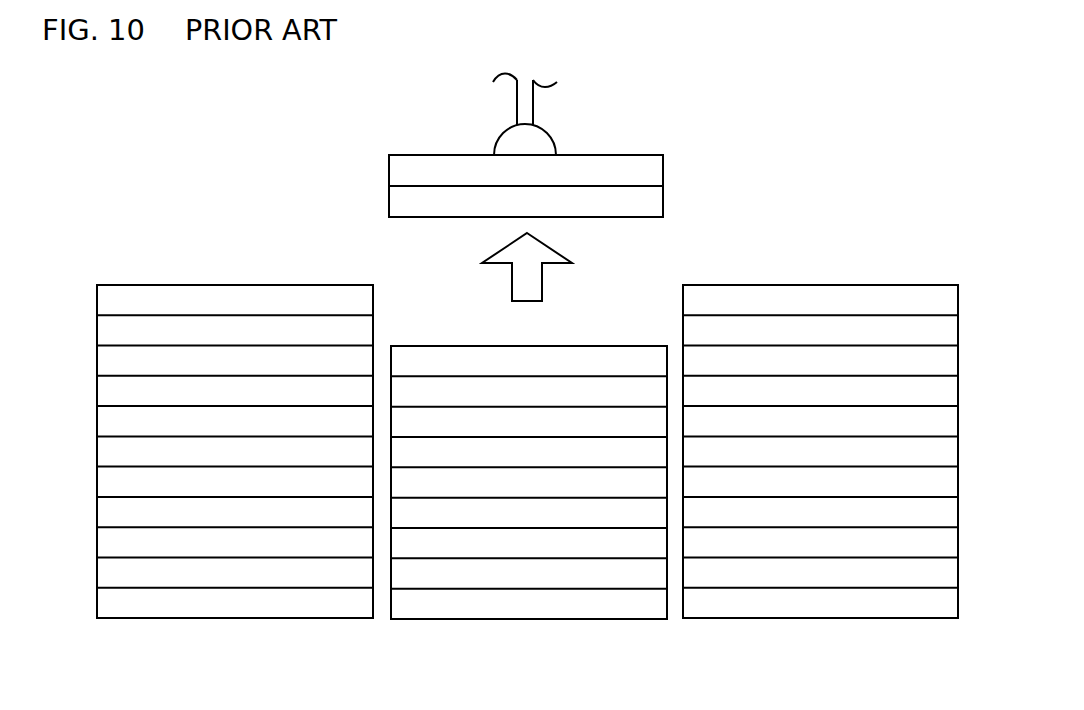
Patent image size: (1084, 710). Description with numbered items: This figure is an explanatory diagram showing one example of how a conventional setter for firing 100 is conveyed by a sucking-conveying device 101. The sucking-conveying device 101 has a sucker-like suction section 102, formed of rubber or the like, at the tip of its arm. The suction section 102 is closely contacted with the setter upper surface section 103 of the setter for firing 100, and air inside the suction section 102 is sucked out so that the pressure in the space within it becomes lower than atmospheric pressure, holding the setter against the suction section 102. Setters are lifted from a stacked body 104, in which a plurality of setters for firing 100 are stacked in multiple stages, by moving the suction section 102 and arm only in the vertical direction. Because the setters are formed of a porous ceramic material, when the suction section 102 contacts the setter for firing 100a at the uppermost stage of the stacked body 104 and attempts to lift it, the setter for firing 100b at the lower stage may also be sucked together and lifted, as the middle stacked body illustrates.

The setter for firing 100 is at (230, 603).
The setter for firing positioned at the uppermost stage 100a is at (645, 165).
The setter for firing positioned at the lower stage 100b is at (645, 203).
The sucking-conveying device 101 is at (410, 138).
The suction section 102 is at (533, 142).
The setter upper surface section 103 is at (455, 155).
The stacked body 104 is at (178, 266).